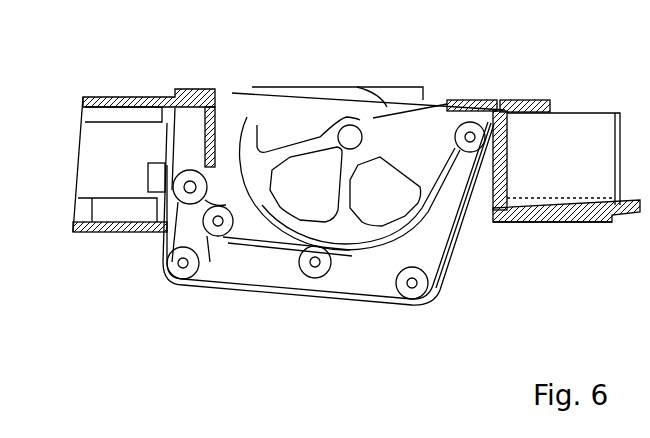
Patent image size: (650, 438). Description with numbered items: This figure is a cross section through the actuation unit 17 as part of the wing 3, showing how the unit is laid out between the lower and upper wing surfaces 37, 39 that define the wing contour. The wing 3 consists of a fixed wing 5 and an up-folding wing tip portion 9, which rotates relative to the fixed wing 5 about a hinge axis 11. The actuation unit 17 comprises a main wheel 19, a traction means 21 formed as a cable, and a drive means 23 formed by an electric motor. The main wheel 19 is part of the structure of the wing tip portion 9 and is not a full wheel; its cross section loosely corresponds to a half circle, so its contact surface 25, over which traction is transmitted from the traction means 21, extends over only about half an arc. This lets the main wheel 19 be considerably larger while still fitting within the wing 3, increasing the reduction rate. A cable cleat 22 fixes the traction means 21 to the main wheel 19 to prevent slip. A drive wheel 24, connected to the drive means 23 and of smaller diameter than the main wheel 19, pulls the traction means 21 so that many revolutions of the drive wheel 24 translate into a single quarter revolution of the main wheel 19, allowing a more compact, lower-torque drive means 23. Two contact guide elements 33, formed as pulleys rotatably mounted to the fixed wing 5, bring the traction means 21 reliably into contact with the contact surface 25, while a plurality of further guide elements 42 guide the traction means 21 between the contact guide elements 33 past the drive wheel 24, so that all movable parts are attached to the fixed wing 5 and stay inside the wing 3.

The wing 3 is at (156, 68).
The fixed wing 5 is at (78, 232).
The wing tip portion 9 is at (568, 212).
The hinge axis 11 is at (350, 137).
The actuation unit 17 is at (468, 316).
The main wheel 19 is at (430, 120).
The traction means 21 is at (385, 288).
The cable cleat 22 is at (337, 248).
The drive means 23 is at (148, 172).
The drive wheel 24 is at (168, 162).
The contact surface 25 is at (247, 118).
The contact guide elements 33 is at (471, 132).
The lower wing surface 37 is at (125, 233).
The upper wing surface 39 is at (127, 97).
The further guide elements 42 is at (180, 272).